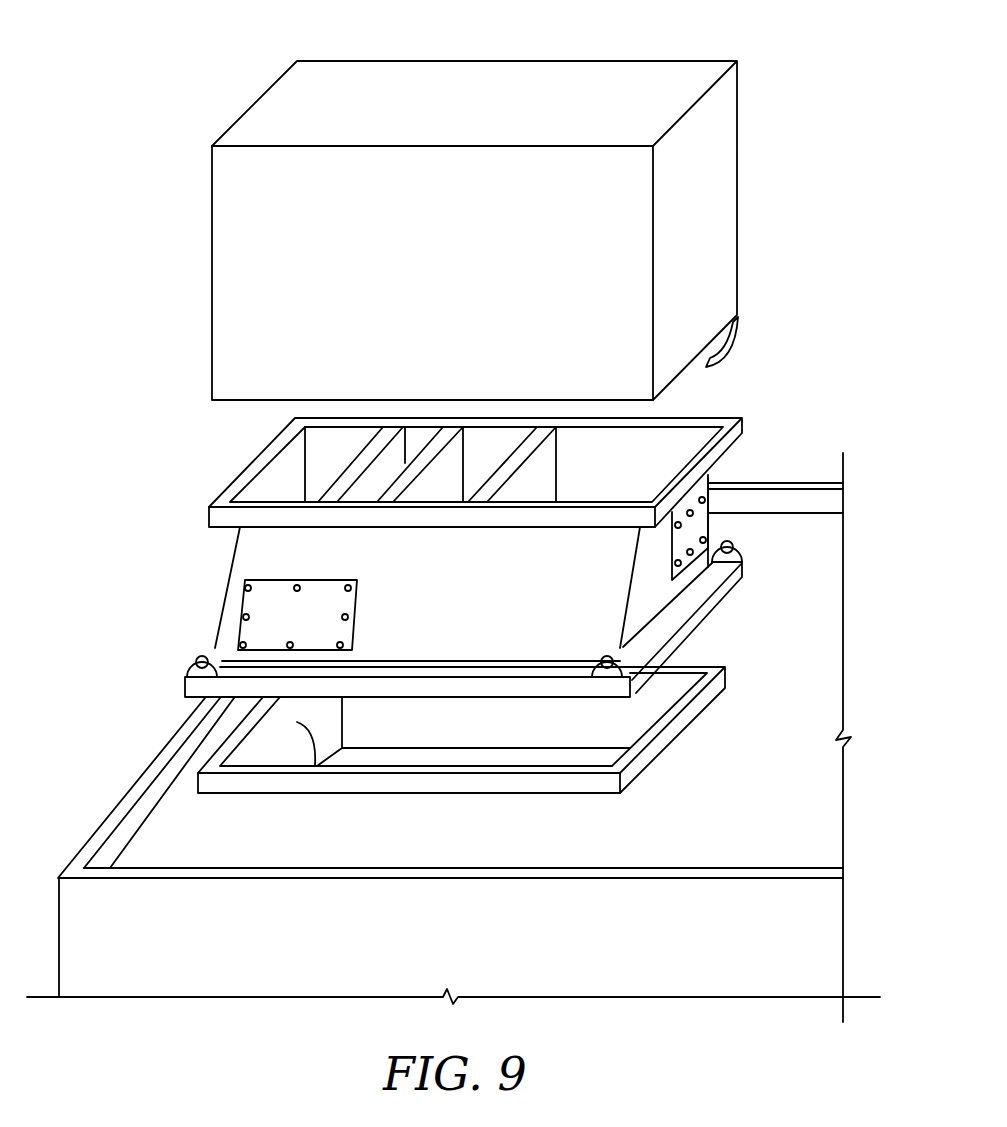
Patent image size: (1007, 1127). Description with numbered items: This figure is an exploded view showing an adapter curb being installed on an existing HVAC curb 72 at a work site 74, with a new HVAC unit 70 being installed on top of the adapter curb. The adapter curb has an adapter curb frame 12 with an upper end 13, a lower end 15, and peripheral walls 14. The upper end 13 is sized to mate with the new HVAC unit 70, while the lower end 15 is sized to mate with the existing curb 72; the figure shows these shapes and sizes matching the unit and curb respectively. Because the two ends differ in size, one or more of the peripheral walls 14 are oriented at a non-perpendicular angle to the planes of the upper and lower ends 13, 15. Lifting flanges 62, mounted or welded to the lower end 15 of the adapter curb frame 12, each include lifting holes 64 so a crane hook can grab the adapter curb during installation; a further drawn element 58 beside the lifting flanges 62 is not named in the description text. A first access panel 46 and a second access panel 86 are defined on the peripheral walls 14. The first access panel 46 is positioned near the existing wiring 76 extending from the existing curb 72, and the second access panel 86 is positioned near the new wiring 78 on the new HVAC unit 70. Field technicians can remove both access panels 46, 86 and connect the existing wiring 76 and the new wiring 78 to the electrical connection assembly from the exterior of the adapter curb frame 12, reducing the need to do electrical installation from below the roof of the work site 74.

The new HVAC unit 70 is at (471, 77).
The new wiring 78 is at (730, 362).
The upper end 13 is at (228, 498).
The adapter curb frame 12 is at (260, 558).
The peripheral walls 14 is at (512, 612).
The first access panel 46 is at (250, 602).
The second access panel 86 is at (700, 523).
The hinge arm 58 is at (690, 625).
The lifting flange 62 is at (187, 670).
The lifting holes 64 is at (197, 657).
The lower end 15 is at (193, 699).
The existing HVAC curb 72 is at (366, 785).
The existing wiring 76 is at (312, 742).
The work site 74 is at (752, 838).